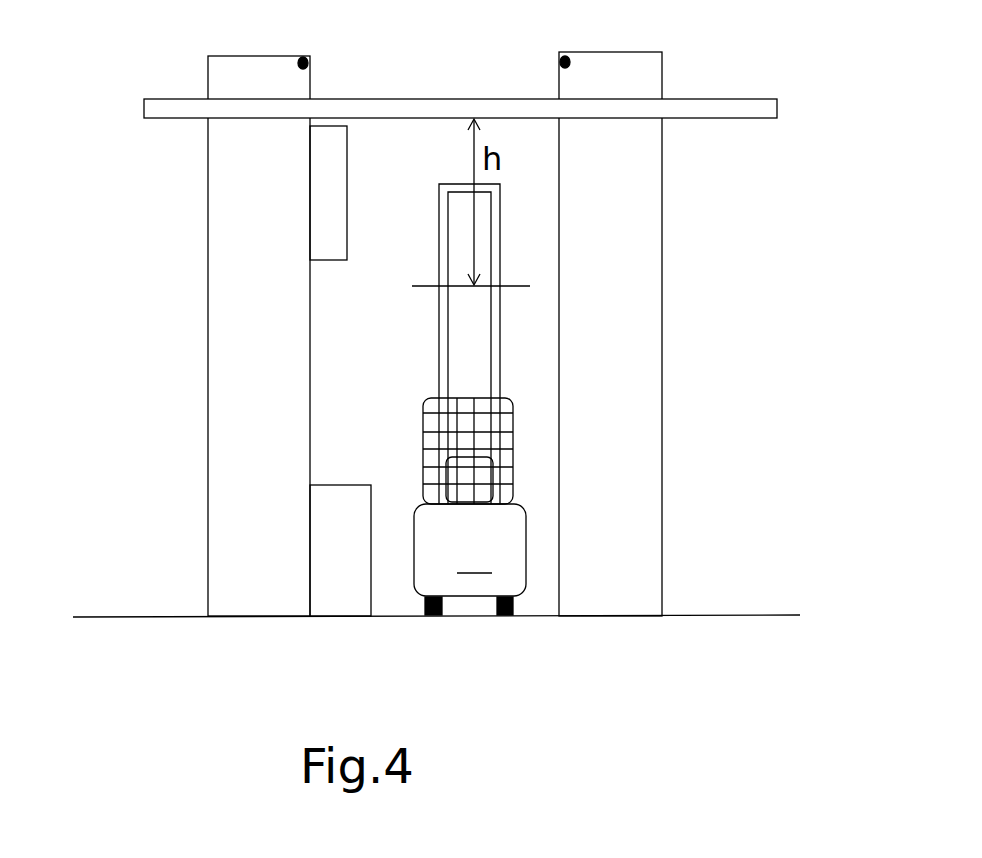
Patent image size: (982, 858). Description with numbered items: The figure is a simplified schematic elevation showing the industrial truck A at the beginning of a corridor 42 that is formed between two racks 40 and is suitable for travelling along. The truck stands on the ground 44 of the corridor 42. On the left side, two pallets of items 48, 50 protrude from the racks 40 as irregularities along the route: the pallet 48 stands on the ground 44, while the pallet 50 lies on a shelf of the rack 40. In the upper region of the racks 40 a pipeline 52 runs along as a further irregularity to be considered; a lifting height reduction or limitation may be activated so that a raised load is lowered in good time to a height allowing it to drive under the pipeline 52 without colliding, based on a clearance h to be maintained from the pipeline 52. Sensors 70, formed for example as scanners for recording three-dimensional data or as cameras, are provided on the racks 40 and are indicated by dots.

The racks 40 is at (208, 430).
The corridor 42 is at (400, 368).
The ground 44 is at (540, 617).
The pallet of items 48 is at (343, 503).
The pallet of items 50 is at (332, 247).
The pipeline 52 is at (491, 112).
The sensors 70 is at (308, 57).